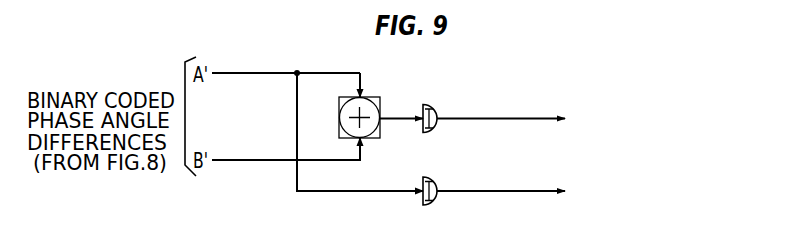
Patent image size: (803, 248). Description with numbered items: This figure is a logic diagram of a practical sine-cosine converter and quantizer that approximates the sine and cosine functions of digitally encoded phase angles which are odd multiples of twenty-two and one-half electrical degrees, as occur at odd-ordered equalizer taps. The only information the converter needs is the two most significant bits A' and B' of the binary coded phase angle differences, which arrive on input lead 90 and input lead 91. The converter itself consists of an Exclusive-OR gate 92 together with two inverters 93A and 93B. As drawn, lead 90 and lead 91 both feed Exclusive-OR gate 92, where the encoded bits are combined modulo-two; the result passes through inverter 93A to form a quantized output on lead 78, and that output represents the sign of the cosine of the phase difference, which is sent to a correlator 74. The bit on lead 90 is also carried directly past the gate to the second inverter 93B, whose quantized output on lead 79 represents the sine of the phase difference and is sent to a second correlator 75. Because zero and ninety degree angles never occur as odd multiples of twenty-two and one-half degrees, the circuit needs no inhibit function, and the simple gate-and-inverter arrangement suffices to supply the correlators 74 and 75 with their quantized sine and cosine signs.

The input lead 90 is at (241, 60).
The input lead 91 is at (241, 147).
The Exclusive-OR gate 92 is at (370, 97).
The inverter 93A is at (432, 132).
The inverter 93B is at (432, 204).
The output lead 78 is at (513, 118).
The output lead 79 is at (518, 191).
The correlator 74 is at (652, 121).
The correlator 75 is at (652, 192).